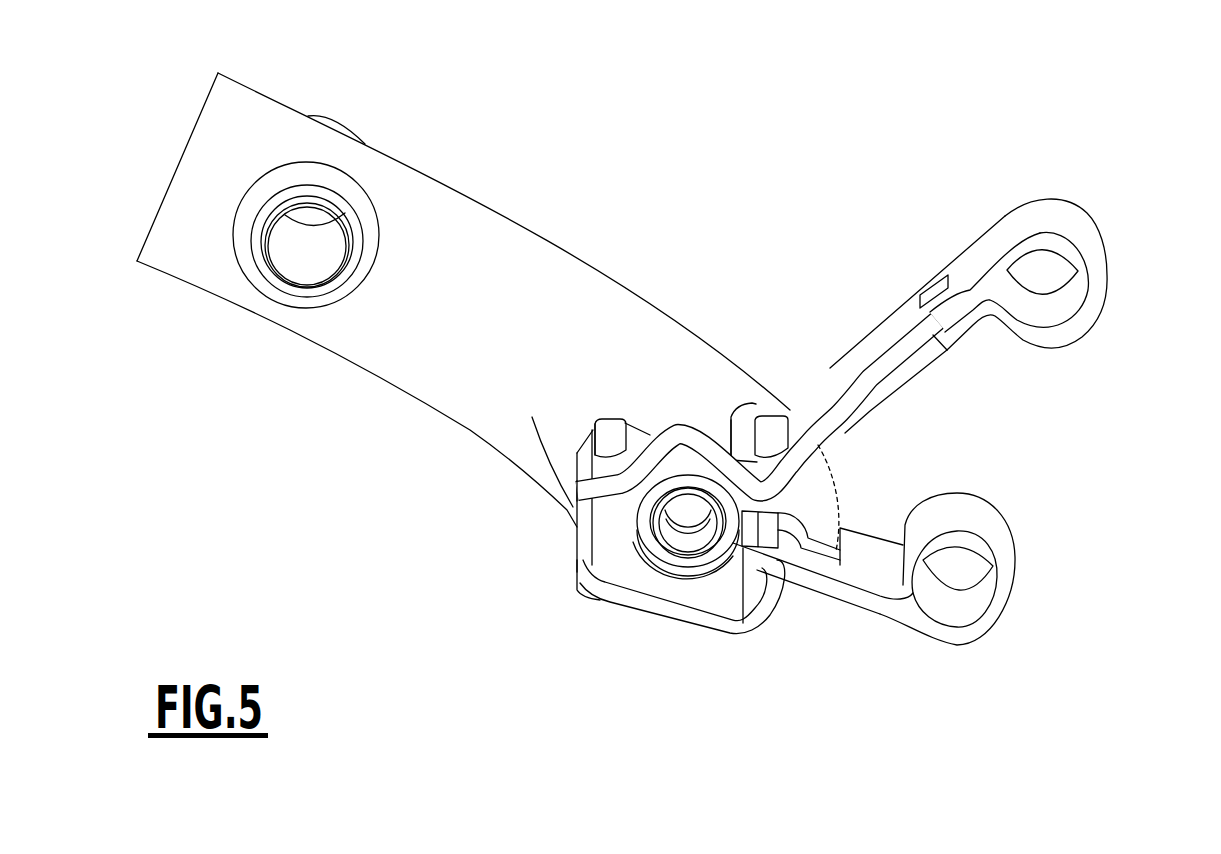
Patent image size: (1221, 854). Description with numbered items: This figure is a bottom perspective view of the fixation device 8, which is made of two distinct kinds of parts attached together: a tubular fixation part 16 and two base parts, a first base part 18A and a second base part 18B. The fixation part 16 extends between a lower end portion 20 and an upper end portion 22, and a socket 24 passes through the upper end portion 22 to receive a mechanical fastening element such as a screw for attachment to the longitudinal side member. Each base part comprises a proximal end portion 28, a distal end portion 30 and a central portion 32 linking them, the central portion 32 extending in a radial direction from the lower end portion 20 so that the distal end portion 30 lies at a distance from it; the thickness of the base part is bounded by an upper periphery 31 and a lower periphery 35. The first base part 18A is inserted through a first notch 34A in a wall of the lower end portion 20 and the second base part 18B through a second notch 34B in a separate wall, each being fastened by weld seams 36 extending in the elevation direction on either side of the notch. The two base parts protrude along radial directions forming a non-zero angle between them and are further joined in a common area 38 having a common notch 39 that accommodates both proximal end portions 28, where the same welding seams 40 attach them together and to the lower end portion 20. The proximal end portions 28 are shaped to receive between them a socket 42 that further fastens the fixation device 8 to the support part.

The fixation device 8 is at (577, 162).
The fixation part 16 is at (390, 358).
The first base part 18A is at (895, 323).
The second base part 18B is at (897, 613).
The lower end portion 20 is at (583, 527).
The upper end portion 22 is at (217, 143).
The socket 24 is at (315, 203).
The proximal end portion 28 is at (665, 430).
The distal end portion 30 is at (1090, 242).
The upper periphery 31 is at (873, 327).
The central portion 32 is at (860, 357).
The first notch 34A is at (735, 457).
The second notch 34B is at (767, 567).
The lower periphery 35 is at (903, 350).
The weld seams 36 is at (769, 433).
The common area 38 is at (580, 570).
The common notch 39 is at (620, 430).
The welding seams 40 is at (607, 428).
The socket 42 is at (703, 527).